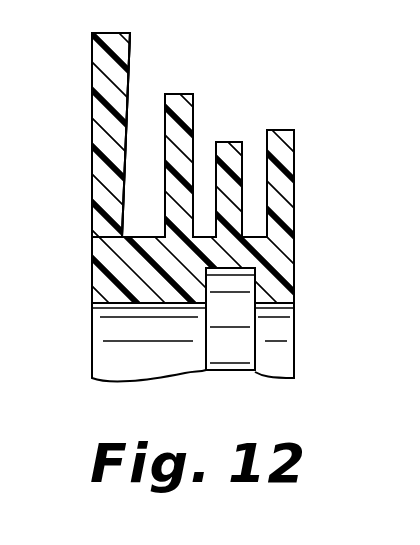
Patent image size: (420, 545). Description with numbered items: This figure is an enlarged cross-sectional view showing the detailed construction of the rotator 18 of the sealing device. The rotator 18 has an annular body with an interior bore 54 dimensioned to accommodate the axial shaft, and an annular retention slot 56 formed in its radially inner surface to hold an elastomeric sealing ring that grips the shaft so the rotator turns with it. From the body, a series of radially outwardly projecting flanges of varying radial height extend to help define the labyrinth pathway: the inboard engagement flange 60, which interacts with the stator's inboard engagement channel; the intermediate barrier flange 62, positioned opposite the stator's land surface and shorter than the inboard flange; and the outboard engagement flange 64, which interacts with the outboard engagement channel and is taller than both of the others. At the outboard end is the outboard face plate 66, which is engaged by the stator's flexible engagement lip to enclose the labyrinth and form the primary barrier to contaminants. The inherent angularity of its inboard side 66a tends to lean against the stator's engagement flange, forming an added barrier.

The rotator 18 is at (57, 245).
The interior bore 54 is at (138, 327).
The annular retention slot 56 is at (228, 313).
The inboard engagement flange 60 is at (282, 128).
The intermediate barrier flange 62 is at (227, 142).
The outboard engagement flange 64 is at (180, 94).
The outboard face plate 66 is at (102, 80).
The inboard side of face plate 66a is at (128, 75).